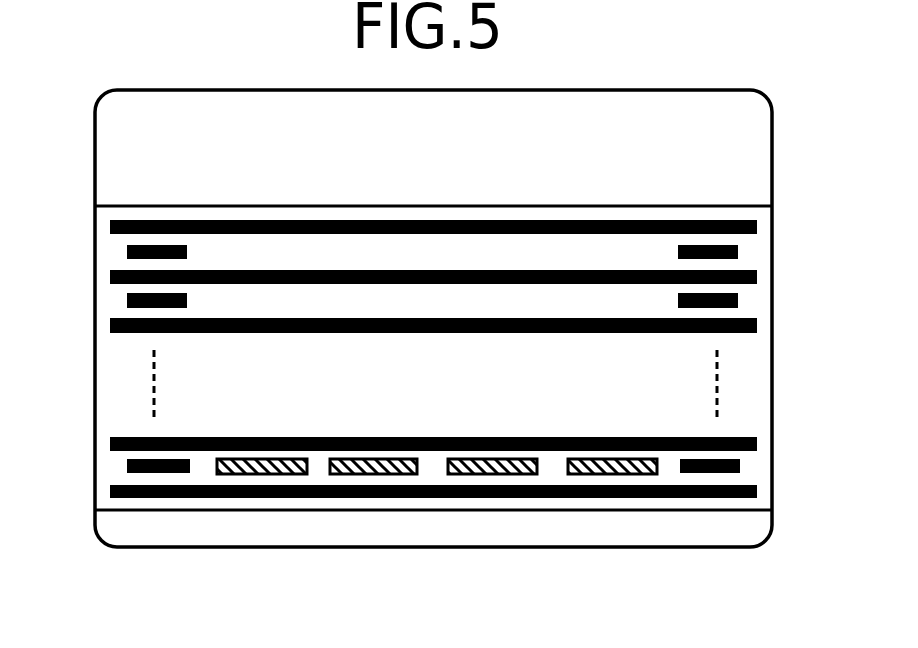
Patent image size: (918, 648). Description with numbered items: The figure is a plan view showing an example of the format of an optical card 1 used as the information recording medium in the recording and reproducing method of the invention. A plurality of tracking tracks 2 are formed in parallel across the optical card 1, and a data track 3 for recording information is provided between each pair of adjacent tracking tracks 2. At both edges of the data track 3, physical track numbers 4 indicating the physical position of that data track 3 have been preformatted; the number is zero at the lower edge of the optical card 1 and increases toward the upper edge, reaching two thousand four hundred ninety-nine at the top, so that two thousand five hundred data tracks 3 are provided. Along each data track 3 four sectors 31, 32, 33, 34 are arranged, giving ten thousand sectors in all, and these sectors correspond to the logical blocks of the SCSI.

The optical card 1 is at (772, 150).
The tracking tracks 2 is at (757, 277).
The data track 3 is at (207, 252).
The physical track numbers 4 is at (128, 302).
The sector 31 is at (262, 474).
The sector 32 is at (372, 474).
The sector 33 is at (490, 474).
The sector 34 is at (608, 474).